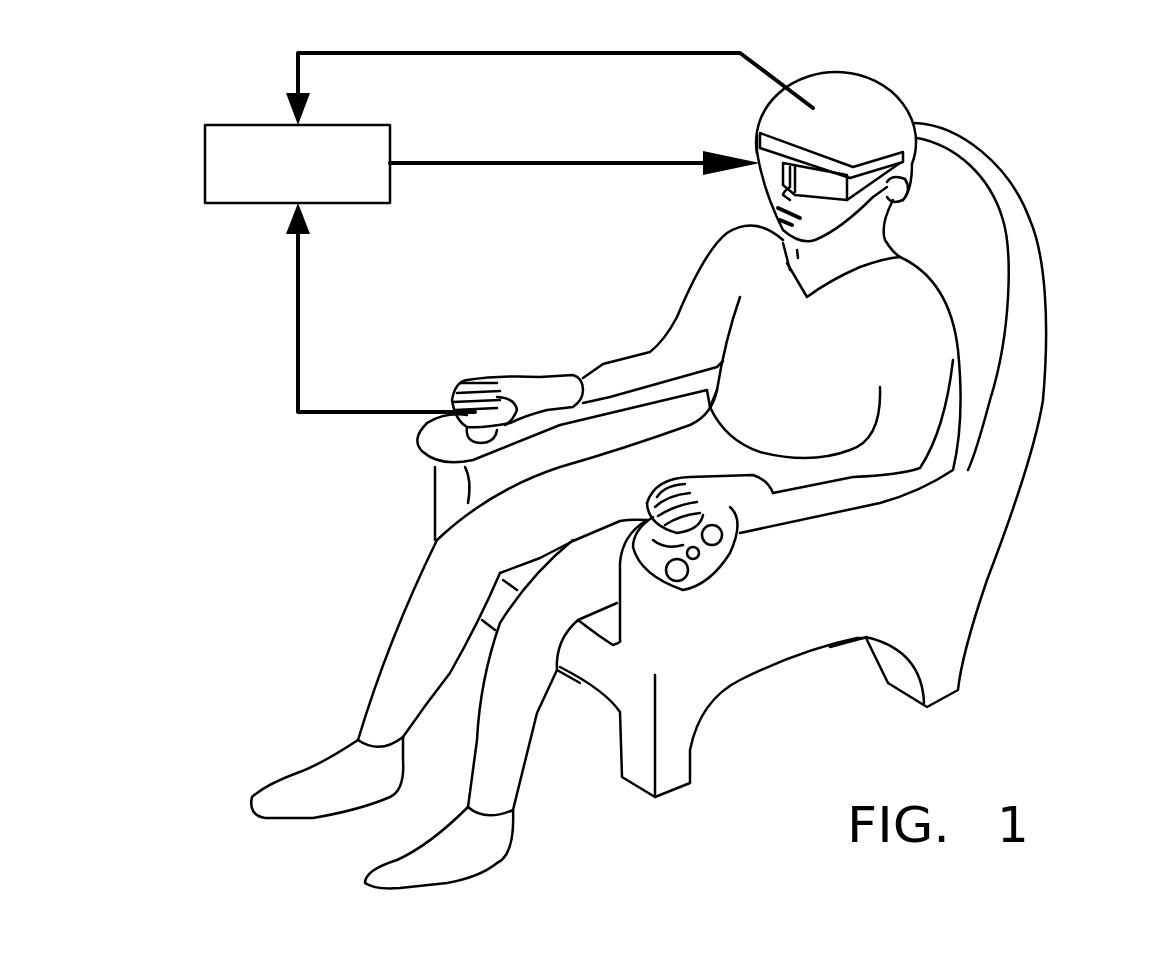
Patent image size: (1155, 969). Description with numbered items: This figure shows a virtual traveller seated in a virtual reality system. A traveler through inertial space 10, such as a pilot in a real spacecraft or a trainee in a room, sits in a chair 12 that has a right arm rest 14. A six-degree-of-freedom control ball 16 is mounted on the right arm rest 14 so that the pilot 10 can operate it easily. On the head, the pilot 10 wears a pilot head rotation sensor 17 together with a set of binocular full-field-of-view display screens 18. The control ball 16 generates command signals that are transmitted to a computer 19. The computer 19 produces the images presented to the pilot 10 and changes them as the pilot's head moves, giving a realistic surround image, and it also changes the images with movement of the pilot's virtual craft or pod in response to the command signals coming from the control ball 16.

The traveler 10 is at (897, 317).
The chair 12 is at (950, 540).
The right arm rest 14 is at (607, 412).
The six-degree-of-freedom control ball 16 is at (488, 412).
The pilot head rotation sensor 17 is at (890, 92).
The binocular full-field-of-view display screens 18 is at (757, 143).
The computer 19 is at (207, 124).